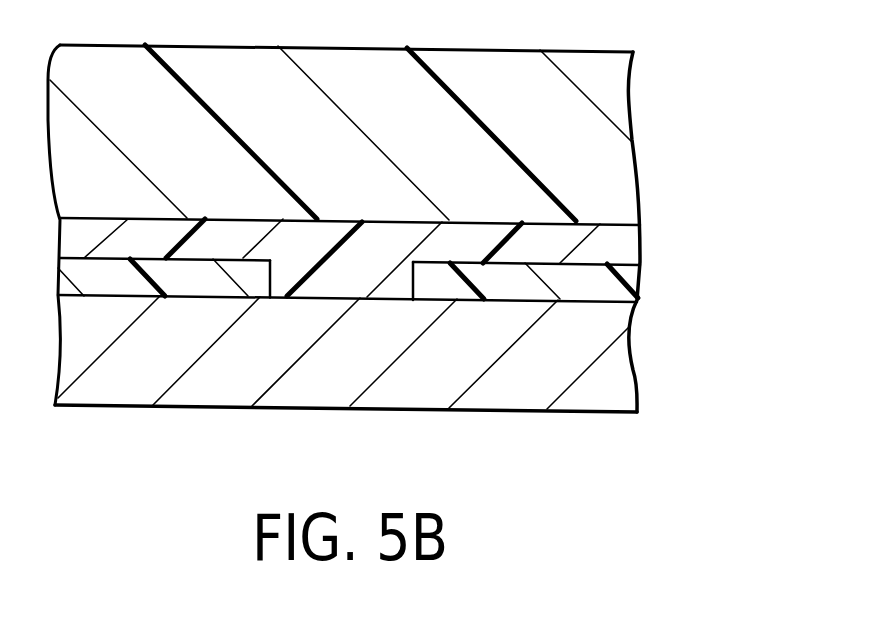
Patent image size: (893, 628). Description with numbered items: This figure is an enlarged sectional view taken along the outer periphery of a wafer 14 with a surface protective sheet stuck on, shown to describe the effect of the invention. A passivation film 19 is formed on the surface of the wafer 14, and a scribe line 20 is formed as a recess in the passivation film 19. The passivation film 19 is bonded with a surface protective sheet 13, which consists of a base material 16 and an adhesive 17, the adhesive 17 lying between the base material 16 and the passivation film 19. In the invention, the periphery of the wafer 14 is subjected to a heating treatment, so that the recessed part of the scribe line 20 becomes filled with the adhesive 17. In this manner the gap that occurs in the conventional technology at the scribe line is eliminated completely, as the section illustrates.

The surface protective sheet 13 is at (735, 90).
The wafer 14 is at (612, 378).
The base material 16 is at (617, 130).
The adhesive 17 is at (613, 250).
The passivation film 19 is at (192, 280).
The scribe line 20 is at (415, 282).